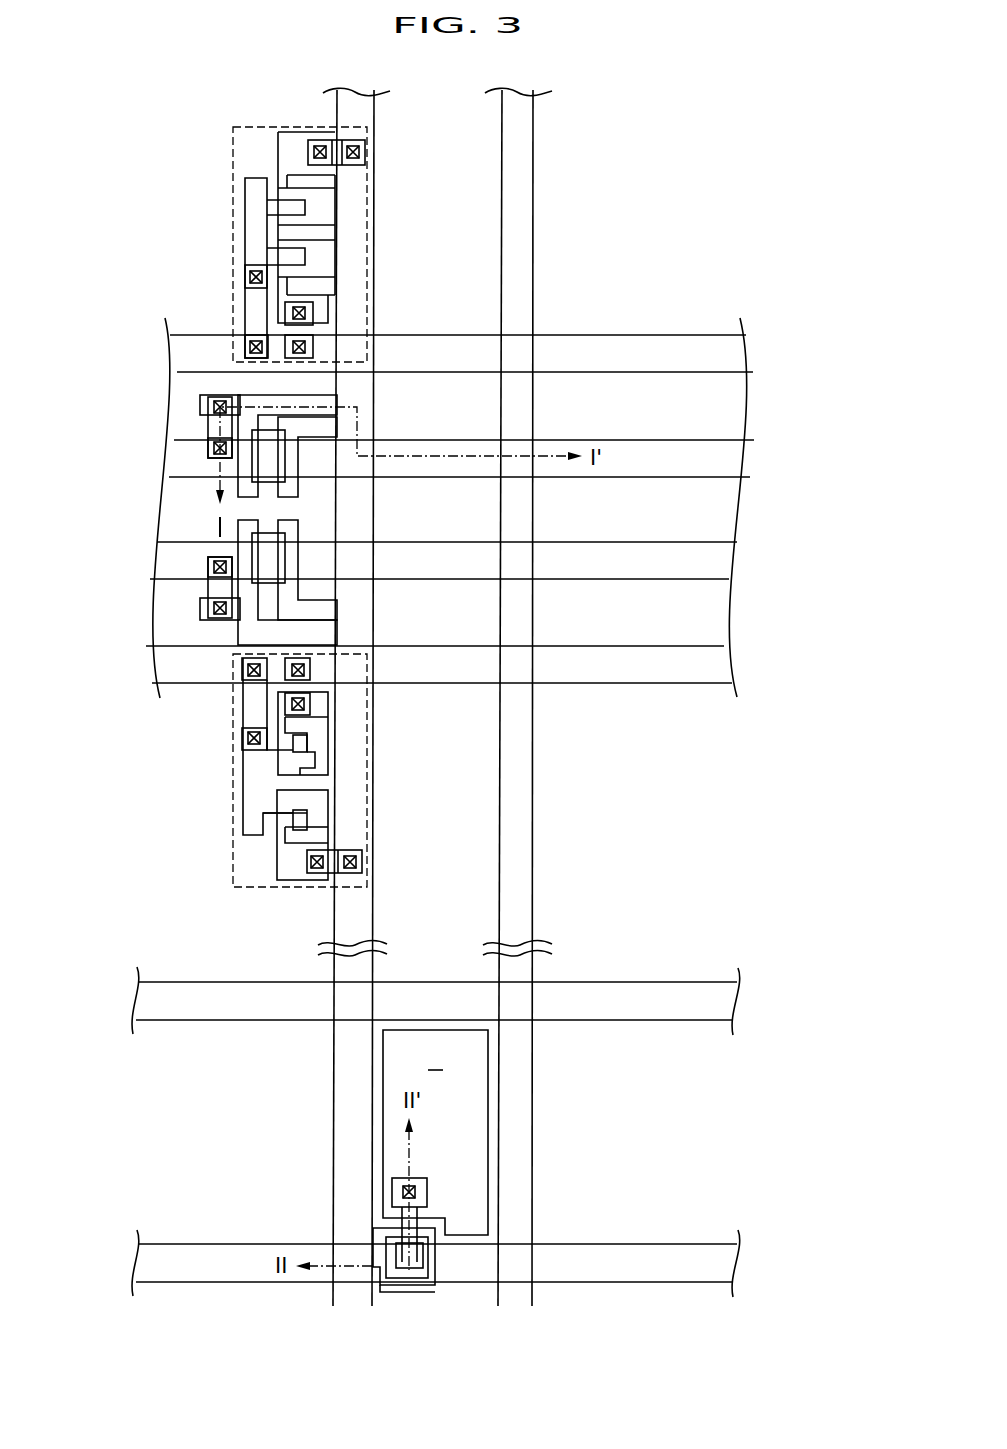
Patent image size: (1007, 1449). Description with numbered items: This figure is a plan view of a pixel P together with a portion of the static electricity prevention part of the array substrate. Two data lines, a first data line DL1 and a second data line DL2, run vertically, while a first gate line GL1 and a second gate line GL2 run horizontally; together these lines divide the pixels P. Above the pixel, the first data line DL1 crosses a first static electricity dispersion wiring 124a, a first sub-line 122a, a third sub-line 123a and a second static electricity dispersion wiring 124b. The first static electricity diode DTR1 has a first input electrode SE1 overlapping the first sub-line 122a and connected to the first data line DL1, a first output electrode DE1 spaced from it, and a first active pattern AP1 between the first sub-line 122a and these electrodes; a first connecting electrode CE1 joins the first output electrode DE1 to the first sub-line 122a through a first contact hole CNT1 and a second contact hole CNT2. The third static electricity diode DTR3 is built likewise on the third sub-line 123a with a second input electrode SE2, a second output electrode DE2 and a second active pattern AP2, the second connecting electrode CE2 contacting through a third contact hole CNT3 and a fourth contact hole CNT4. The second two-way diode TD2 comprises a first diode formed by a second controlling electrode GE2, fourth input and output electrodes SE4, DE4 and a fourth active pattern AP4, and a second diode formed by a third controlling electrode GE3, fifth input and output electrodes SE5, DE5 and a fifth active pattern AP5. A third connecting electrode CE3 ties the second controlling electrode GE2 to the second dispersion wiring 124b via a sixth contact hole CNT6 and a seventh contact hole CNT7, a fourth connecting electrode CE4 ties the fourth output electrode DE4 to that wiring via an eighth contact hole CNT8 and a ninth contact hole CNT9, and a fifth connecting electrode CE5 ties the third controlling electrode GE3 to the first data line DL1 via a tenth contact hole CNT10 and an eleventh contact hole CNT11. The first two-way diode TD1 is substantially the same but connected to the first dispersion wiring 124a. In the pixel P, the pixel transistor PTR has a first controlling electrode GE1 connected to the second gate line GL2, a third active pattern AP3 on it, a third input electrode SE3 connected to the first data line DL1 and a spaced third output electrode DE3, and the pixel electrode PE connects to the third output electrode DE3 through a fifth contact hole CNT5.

The first two-way diode TD1 is at (228, 245).
The second two-way diode TD2 is at (246, 798).
The first static electricity dispersion wiring 124a is at (745, 355).
The first sub-line 122a is at (745, 458).
The third sub-line 123a is at (725, 562).
The second static electricity dispersion wiring 124b is at (725, 665).
The first data line DL1 is at (327, 1310).
The second data line DL2 is at (492, 1310).
The first gate line GL1 is at (742, 1008).
The second gate line GL2 is at (742, 1270).
The first static electricity diode DTR1 is at (287, 435).
The third static electricity diode DTR3 is at (280, 583).
The pixel transistor PTR is at (315, 1216).
The first output electrode DE1 is at (243, 397).
The first input electrode SE1 is at (285, 408).
The first active pattern AP1 is at (272, 441).
The first connecting electrode CE1 is at (210, 430).
The first contact hole CNT1 is at (208, 407).
The second contact hole CNT2 is at (208, 449).
The second output electrode DE2 is at (243, 620).
The second input electrode SE2 is at (285, 610).
The second active pattern AP2 is at (272, 573).
The second connecting electrode CE2 is at (210, 590).
The third contact hole CNT3 is at (208, 567).
The fourth contact hole CNT4 is at (208, 609).
The third connecting electrode CE3 is at (250, 684).
The fourth connecting electrode CE4 is at (250, 707).
The fifth connecting electrode CE5 is at (327, 873).
The sixth contact hole CNT6 is at (305, 702).
The seventh contact hole CNT7 is at (305, 668).
The eighth contact hole CNT8 is at (242, 738).
The ninth contact hole CNT9 is at (242, 664).
The tenth contact hole CNT10 is at (317, 873).
The eleventh contact hole CNT11 is at (364, 862).
The second controlling electrode GE2 is at (323, 718).
The fourth input electrode SE4 is at (323, 732).
The fourth active pattern AP4 is at (310, 745).
The fourth output electrode DE4 is at (288, 760).
The fifth input electrode SE5 is at (283, 803).
The fifth active pattern AP5 is at (292, 816).
The fifth output electrode DE5 is at (285, 832).
The third controlling electrode GE3 is at (283, 870).
The pixel electrode PE is at (488, 1132).
The pixel P is at (435, 1059).
The fifth contact hole CNT5 is at (428, 1190).
The third output electrode DE3 is at (372, 1247).
The third active pattern AP3 is at (374, 1257).
The third input electrode SE3 is at (370, 1263).
The first controlling electrode GE1 is at (372, 1278).